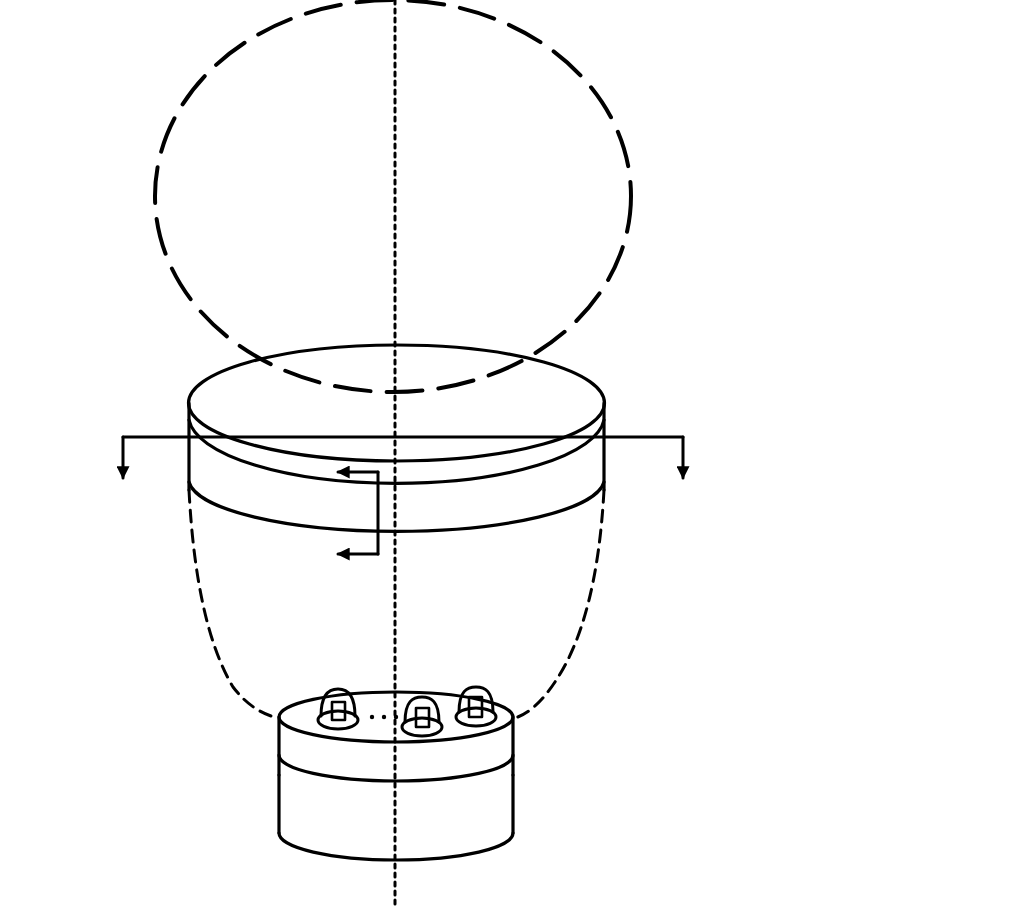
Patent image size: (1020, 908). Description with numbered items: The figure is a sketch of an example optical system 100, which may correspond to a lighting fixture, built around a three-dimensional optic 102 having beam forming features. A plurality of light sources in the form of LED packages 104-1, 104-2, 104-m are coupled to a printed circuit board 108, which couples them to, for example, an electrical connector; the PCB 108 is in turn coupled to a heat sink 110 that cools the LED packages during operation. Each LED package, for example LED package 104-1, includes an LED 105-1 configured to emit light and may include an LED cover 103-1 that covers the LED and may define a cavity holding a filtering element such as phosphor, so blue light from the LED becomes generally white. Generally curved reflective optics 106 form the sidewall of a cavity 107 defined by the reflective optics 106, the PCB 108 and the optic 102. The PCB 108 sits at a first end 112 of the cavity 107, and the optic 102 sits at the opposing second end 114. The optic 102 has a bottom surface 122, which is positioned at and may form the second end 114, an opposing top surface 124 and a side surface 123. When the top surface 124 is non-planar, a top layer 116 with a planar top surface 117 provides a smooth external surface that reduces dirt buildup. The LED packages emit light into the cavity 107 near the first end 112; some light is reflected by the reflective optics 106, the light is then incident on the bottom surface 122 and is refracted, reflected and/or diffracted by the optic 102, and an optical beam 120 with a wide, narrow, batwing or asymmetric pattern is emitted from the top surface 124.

The optical system 100 is at (143, 21).
The 3-D optic 102 is at (608, 466).
The LED cover 103-1 is at (497, 690).
The LED package 104-1 is at (502, 692).
The LED package 104-2 is at (398, 709).
The LED package 104-m is at (328, 686).
The LED 105-1 is at (476, 718).
The reflective optics 106 is at (599, 607).
The cavity 107 is at (223, 606).
The printed circuit board 108 is at (520, 732).
The heat sink 110 is at (520, 794).
The first end 112 is at (305, 721).
The second end 114 is at (227, 518).
The top layer 116 is at (614, 424).
The planar top surface 117 is at (480, 368).
The optical beam 120 is at (618, 130).
The bottom surface 122 is at (200, 491).
The side surface 123 is at (597, 459).
The top surface 124 is at (277, 482).